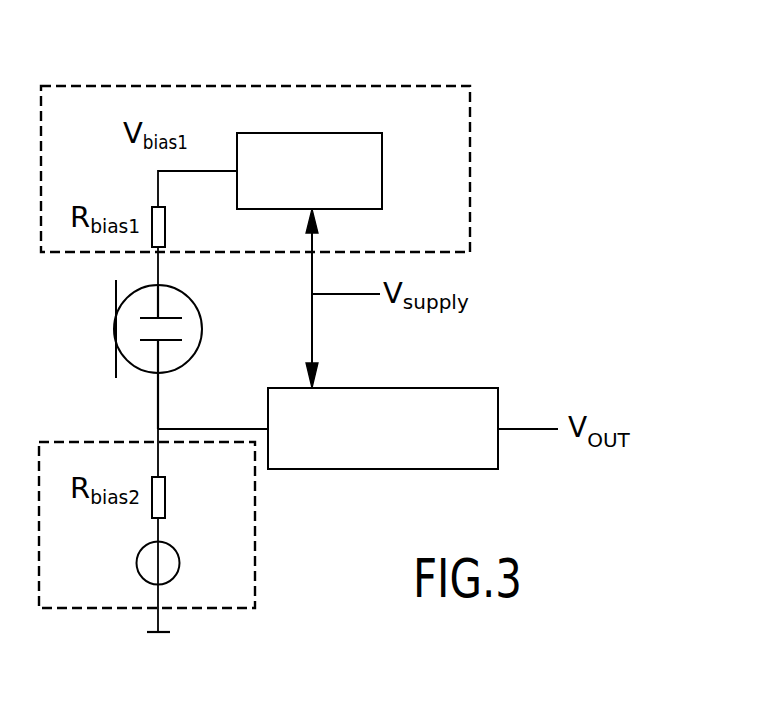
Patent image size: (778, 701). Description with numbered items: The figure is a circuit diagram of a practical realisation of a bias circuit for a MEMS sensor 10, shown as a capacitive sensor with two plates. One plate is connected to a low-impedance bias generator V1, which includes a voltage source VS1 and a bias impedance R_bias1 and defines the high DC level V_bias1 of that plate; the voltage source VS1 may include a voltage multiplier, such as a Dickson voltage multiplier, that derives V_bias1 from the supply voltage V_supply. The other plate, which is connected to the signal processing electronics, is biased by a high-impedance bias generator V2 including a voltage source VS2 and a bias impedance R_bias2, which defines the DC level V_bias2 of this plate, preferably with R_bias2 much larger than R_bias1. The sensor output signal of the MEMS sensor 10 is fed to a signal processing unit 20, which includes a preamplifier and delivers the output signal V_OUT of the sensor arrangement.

The MEMS sensor 10 is at (116, 338).
The signal processing unit 20 is at (484, 388).
The low-impedance bias generator V1 is at (425, 86).
The voltage source VS1 is at (315, 133).
The high-impedance bias generator V2 is at (256, 580).
The voltage source VS2 is at (162, 575).